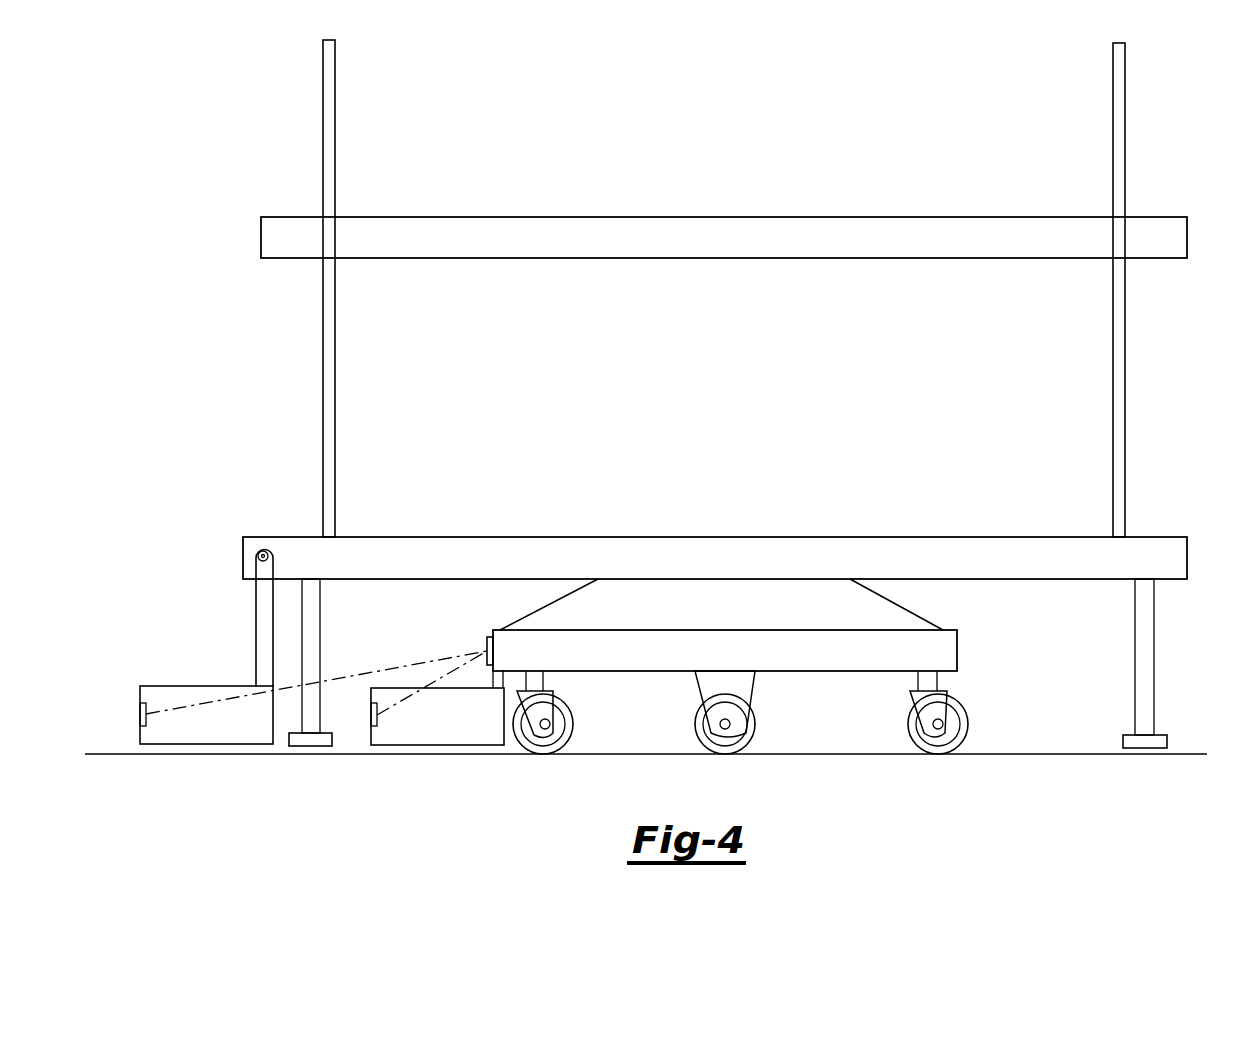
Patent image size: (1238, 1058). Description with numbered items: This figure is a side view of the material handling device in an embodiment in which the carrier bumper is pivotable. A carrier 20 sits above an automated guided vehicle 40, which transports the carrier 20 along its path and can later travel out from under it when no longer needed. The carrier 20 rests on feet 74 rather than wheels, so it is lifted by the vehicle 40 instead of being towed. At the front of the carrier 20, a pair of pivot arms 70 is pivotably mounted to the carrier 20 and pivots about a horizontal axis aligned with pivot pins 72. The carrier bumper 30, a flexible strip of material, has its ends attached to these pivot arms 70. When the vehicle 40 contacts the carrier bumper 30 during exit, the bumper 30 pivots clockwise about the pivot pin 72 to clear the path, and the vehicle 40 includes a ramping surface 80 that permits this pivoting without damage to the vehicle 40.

The carrier 20 is at (738, 238).
The carrier bumper 30 is at (205, 693).
The automated guided vehicle 40 is at (723, 598).
The pivot arms 70 is at (265, 623).
The pivot pins 72 is at (260, 552).
The feet 74 is at (1167, 741).
The ramping surface 80 is at (537, 609).